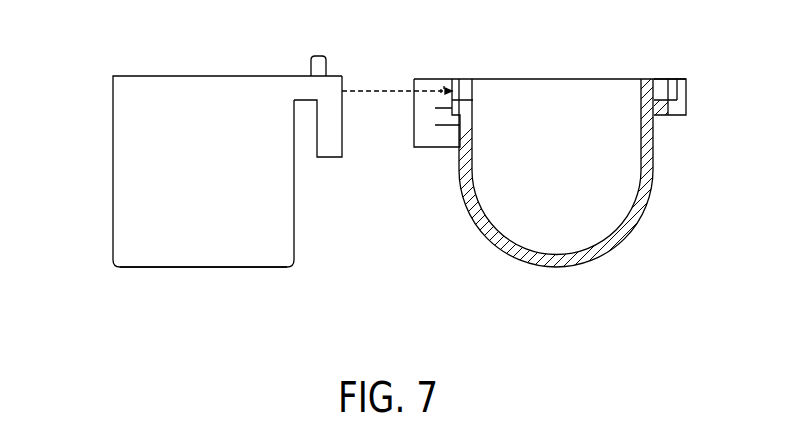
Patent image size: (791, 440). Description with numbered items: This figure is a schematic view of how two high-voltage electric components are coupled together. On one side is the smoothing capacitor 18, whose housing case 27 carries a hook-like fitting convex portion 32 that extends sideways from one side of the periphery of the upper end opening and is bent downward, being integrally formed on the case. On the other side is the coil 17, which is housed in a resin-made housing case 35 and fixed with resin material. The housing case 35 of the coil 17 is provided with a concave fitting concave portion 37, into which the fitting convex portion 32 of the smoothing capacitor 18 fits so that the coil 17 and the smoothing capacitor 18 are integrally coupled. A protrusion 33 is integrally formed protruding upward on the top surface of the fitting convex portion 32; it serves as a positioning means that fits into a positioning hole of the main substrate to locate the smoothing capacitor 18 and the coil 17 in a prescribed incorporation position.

The coil 17 is at (655, 176).
The smoothing capacitor 18 is at (205, 270).
The housing case 27 is at (132, 198).
The fitting convex portion 32 is at (329, 150).
The protrusion 33 is at (317, 62).
The housing case 35 is at (623, 230).
The fitting concave portion 37 is at (462, 84).